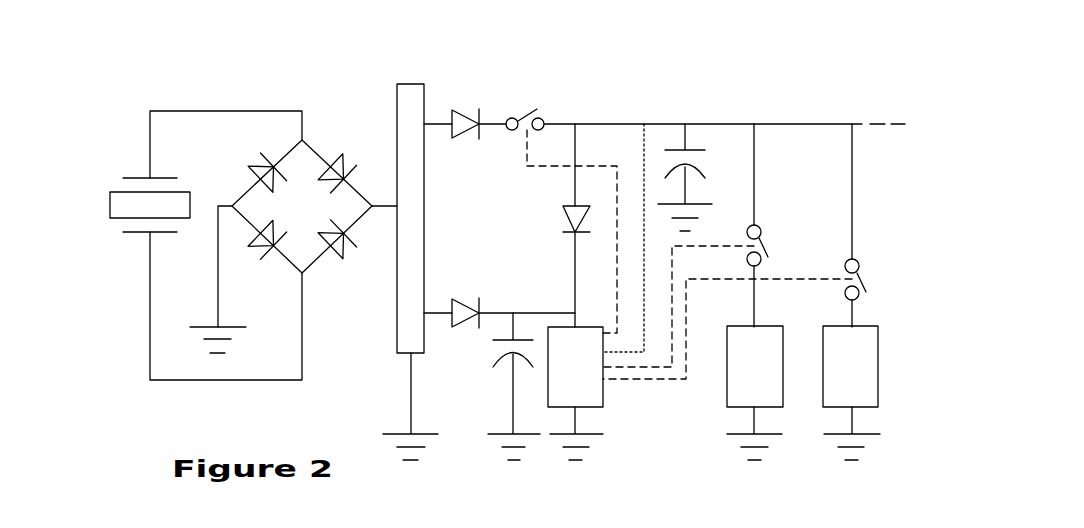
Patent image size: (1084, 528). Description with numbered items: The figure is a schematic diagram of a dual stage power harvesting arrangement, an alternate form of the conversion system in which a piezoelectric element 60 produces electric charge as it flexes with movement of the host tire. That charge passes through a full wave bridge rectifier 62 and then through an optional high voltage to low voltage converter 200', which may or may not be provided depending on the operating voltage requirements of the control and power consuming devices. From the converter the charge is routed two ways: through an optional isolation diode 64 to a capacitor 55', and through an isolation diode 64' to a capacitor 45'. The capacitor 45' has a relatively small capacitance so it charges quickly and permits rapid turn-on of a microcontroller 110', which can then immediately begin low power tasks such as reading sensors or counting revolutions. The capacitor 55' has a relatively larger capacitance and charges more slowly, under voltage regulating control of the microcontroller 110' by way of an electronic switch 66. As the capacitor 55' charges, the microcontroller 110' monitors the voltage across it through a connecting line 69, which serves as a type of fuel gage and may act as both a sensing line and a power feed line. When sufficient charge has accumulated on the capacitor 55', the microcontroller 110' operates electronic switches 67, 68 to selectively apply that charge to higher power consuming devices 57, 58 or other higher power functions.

The piezoelectric element 60 is at (110, 208).
The full wave bridge rectifier 62 is at (317, 140).
The high voltage to low voltage converter 200′ is at (420, 83).
The isolation diode 64 is at (462, 110).
The isolation diode 64′ is at (462, 299).
The electronic switch 66 is at (527, 110).
The connecting line 69 is at (643, 150).
The capacitor 55′ is at (703, 150).
The capacitor 45′ is at (508, 354).
The microcontroller 110′ is at (603, 407).
The electronic switch 67 is at (762, 248).
The electronic switch 68 is at (862, 283).
The power consuming device 57 is at (783, 407).
The power consuming device 58 is at (878, 407).